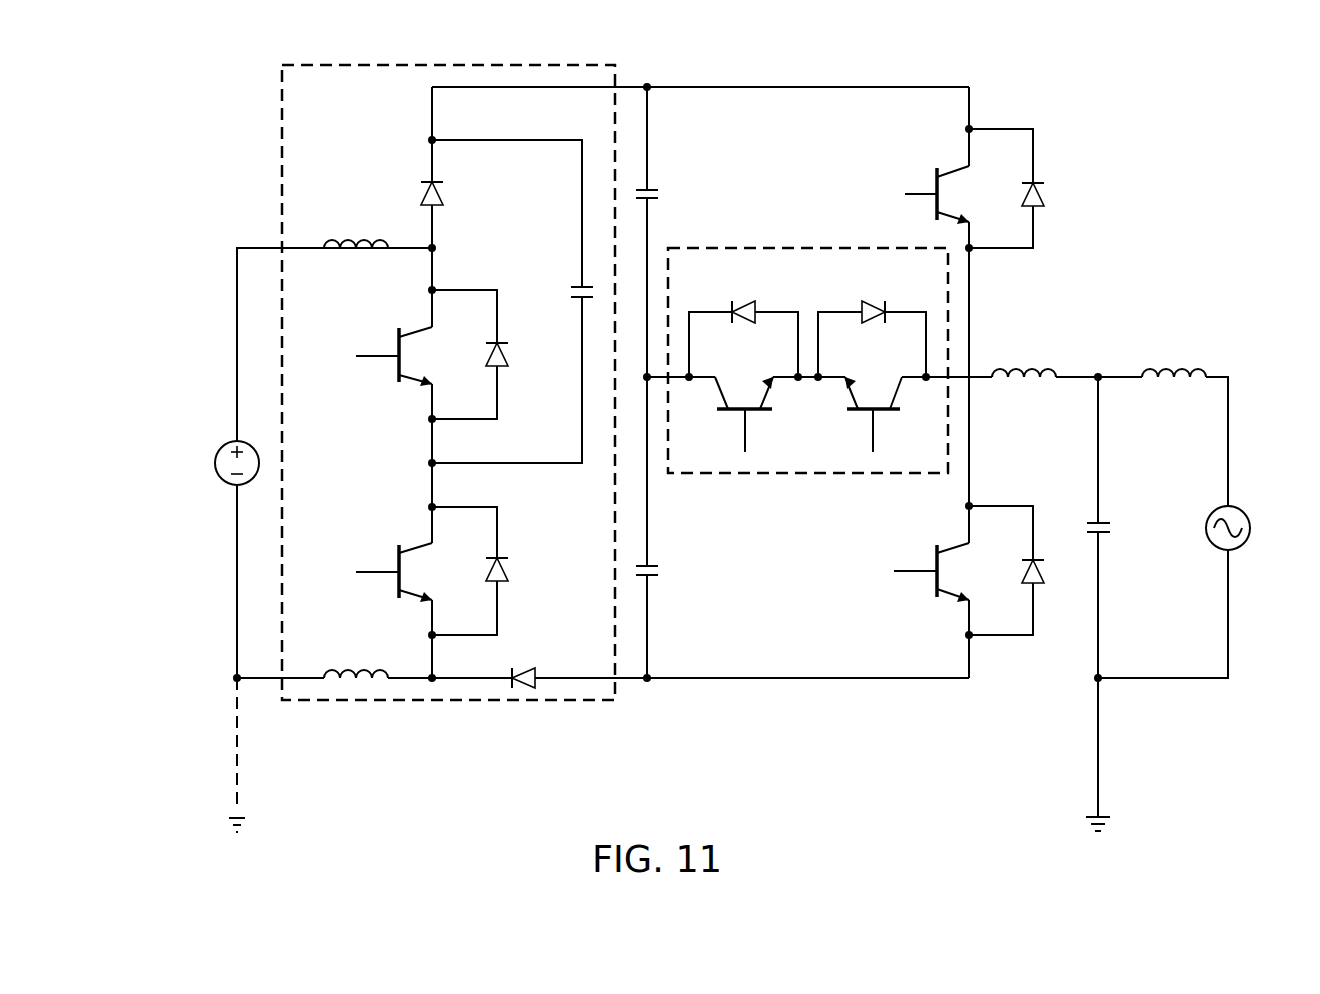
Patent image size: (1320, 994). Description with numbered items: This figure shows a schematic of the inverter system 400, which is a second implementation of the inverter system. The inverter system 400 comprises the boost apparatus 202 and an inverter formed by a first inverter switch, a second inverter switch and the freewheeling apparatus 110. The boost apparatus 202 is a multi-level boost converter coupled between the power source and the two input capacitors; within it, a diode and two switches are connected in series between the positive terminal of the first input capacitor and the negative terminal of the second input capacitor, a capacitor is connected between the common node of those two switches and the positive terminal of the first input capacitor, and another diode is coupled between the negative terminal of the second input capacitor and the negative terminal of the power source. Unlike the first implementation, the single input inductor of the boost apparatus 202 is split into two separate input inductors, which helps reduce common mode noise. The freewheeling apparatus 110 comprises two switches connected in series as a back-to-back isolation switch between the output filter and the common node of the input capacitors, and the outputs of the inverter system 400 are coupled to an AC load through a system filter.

The boost apparatus 202 is at (408, 56).
The freewheeling apparatus 110 is at (810, 238).
The inverter system 400 is at (1160, 122).